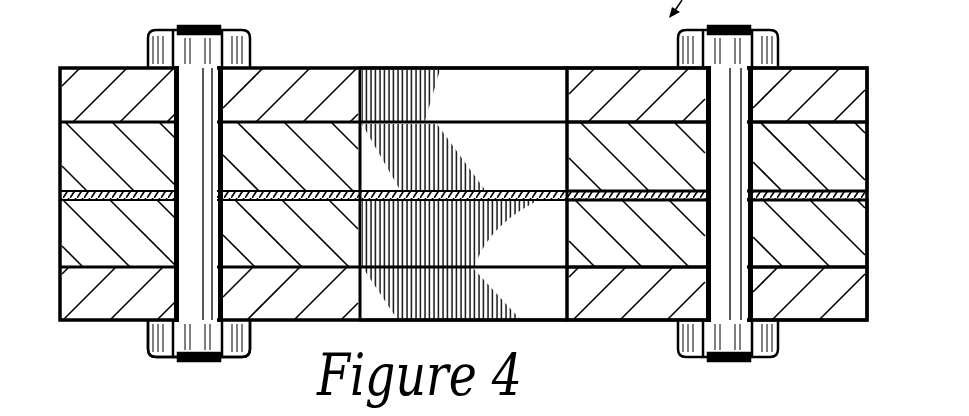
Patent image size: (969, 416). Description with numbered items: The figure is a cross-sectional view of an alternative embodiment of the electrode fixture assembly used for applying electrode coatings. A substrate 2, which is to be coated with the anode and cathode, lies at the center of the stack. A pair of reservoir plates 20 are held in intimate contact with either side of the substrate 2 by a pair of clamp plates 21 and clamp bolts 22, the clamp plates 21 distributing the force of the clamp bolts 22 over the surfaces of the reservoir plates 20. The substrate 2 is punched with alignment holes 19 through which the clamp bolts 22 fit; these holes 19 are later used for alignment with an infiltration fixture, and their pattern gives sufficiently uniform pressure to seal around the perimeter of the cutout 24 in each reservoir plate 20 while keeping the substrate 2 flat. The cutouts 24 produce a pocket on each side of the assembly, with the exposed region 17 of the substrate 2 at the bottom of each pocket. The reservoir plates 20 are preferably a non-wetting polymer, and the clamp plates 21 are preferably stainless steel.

The substrate 2 is at (868, 197).
The exposed region 17 is at (524, 172).
The alignment holes 19 is at (190, 283).
The reservoir plate 20 is at (852, 141).
The clamp plate 21 is at (857, 97).
The clamp bolts 22 is at (203, 98).
The cutout 24 is at (567, 160).